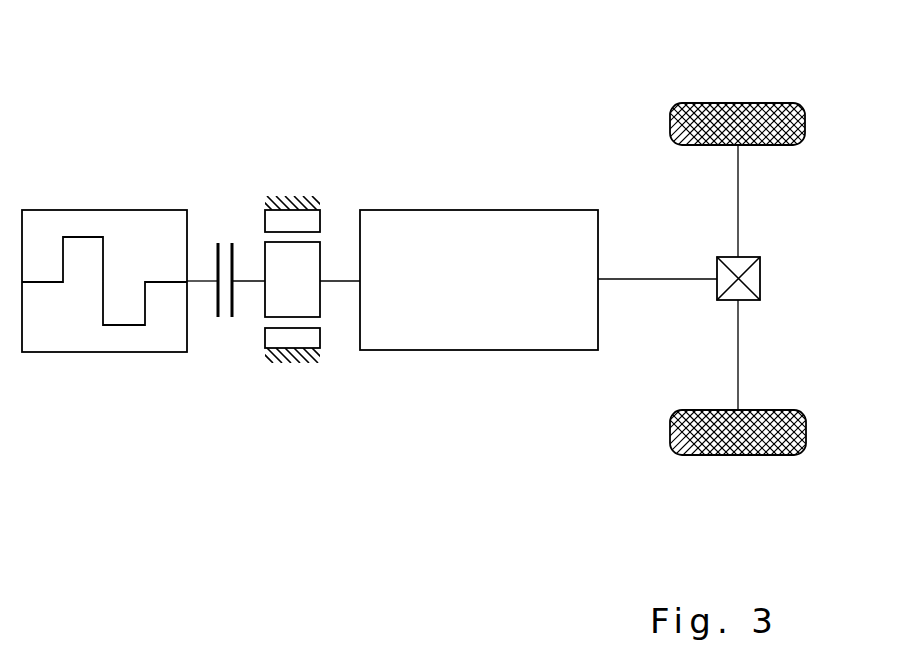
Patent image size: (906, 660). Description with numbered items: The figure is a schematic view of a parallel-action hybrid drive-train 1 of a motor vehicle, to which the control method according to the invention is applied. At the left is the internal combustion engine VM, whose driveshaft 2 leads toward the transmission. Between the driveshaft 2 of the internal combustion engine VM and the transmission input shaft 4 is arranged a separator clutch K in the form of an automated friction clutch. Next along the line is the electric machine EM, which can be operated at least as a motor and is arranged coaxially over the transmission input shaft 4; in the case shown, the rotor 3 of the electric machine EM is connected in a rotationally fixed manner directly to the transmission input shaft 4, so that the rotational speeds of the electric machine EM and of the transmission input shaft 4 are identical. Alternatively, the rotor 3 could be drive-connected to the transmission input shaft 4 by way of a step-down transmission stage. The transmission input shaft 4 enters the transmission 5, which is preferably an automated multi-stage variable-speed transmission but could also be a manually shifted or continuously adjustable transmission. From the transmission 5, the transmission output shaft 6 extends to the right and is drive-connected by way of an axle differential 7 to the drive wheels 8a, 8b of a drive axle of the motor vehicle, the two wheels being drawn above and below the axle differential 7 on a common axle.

The hybrid drive-train 1 is at (104, 282).
The internal combustion engine VM is at (142, 238).
The driveshaft 2 is at (218, 282).
The separator clutch K is at (223, 240).
The rotor 3 is at (282, 282).
The electric machine EM is at (293, 196).
The transmission input shaft 4 is at (336, 283).
The transmission 5 is at (475, 252).
The transmission output shaft 6 is at (637, 280).
The axle differential 7 is at (735, 266).
The drive wheel 8a is at (690, 103).
The drive wheel 8b is at (688, 453).